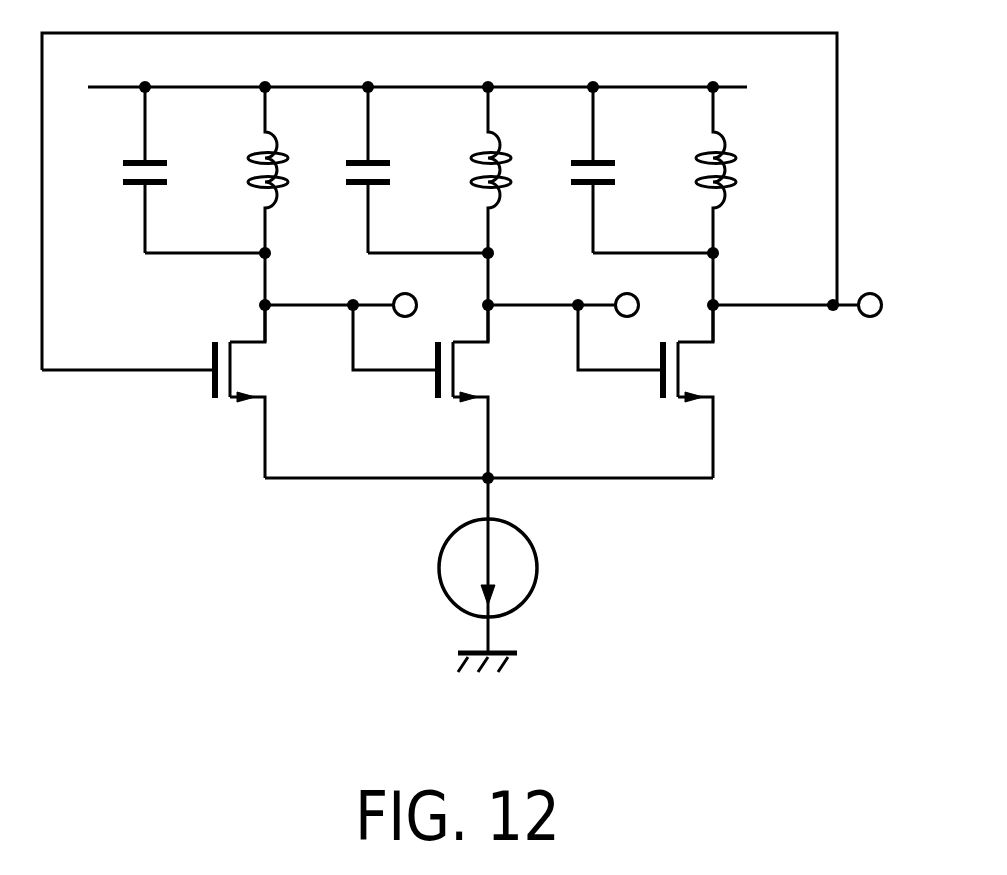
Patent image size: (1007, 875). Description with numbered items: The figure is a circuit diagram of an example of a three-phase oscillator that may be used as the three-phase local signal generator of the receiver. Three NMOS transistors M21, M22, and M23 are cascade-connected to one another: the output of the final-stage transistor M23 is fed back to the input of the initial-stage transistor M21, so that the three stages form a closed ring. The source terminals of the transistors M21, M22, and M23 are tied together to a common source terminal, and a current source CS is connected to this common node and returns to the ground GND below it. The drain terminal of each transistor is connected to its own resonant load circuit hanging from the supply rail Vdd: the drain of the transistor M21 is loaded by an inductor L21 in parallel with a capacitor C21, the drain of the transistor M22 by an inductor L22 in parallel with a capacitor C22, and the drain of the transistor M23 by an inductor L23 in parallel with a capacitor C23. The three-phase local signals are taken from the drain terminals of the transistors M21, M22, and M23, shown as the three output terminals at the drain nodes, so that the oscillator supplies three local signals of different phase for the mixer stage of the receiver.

The capacitor C21 is at (163, 170).
The capacitor C22 is at (390, 170).
The capacitor C23 is at (615, 170).
The inductor L21 is at (242, 170).
The inductor L22 is at (466, 170).
The inductor L23 is at (689, 170).
The NMOS transistor M21 is at (264, 391).
The NMOS transistor M22 is at (489, 391).
The NMOS transistor M23 is at (714, 391).
The current source CS is at (462, 565).
The ground GND is at (524, 654).
The power supply voltage Vdd is at (449, 85).